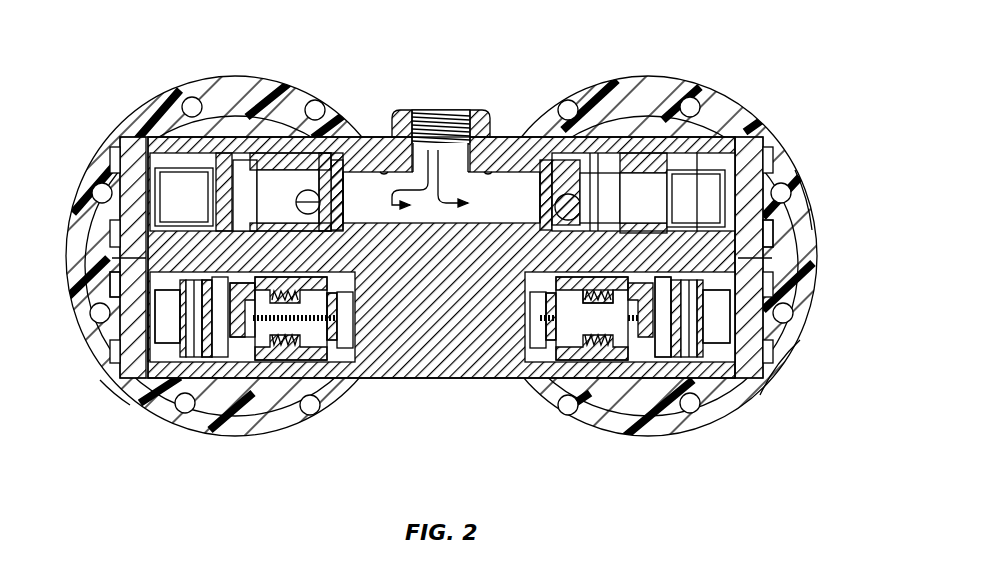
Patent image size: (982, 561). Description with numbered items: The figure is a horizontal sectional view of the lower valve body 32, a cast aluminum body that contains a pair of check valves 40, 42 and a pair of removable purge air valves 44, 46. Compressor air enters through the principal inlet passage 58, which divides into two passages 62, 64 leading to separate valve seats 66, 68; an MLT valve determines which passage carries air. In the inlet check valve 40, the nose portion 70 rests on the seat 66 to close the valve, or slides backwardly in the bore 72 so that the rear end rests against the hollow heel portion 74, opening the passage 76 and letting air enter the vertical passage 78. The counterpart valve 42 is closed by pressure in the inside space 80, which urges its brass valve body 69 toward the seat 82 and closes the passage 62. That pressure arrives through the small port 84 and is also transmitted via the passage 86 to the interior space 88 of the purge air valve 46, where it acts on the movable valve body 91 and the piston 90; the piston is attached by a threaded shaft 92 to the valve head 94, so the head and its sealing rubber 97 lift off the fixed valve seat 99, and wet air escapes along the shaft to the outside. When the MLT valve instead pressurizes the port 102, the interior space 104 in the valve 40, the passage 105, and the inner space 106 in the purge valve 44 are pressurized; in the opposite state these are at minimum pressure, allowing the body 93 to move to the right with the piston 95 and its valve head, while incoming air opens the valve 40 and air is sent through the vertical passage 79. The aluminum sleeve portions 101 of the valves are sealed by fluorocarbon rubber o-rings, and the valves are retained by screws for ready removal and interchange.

The lower valve body 32 is at (802, 178).
The inlet check valve 40 is at (700, 68).
The counterpart check valve 42 is at (124, 103).
The purge air valve 44 is at (770, 380).
The purge air valve 46 is at (100, 375).
The principal inlet passage 58 is at (420, 150).
The inlet passage 62 is at (380, 170).
The inlet passage 64 is at (490, 170).
The valve seat 66 is at (546, 180).
The nose portion / valve seat 68 is at (313, 162).
The valve body 69 is at (355, 305).
The nose portion 70 is at (610, 152).
The bore 72 is at (552, 200).
The hollow heel portion 74 is at (735, 140).
The passage 76 is at (578, 178).
The vertical passage 78 is at (598, 165).
The vertical passage 79 is at (300, 192).
The inside space 80 is at (184, 197).
The valve seat 82 is at (343, 207).
The small port 84 is at (168, 137).
The passage 86 is at (118, 312).
The interior space 88 is at (152, 372).
The piston 90 is at (218, 345).
The movable valve body 91 is at (188, 380).
The threaded shaft 92 is at (280, 345).
The valve body 93 is at (632, 330).
The valve head 94 is at (328, 355).
The piston 95 is at (690, 345).
The sealing rubber / valve head 97 is at (562, 345).
The fixed valve seat 99 is at (596, 350).
The sleeve portion 101 is at (300, 345).
The port 102 is at (715, 140).
The interior space 104 is at (643, 198).
The passage 105 is at (770, 258).
The inner space 106 is at (745, 350).